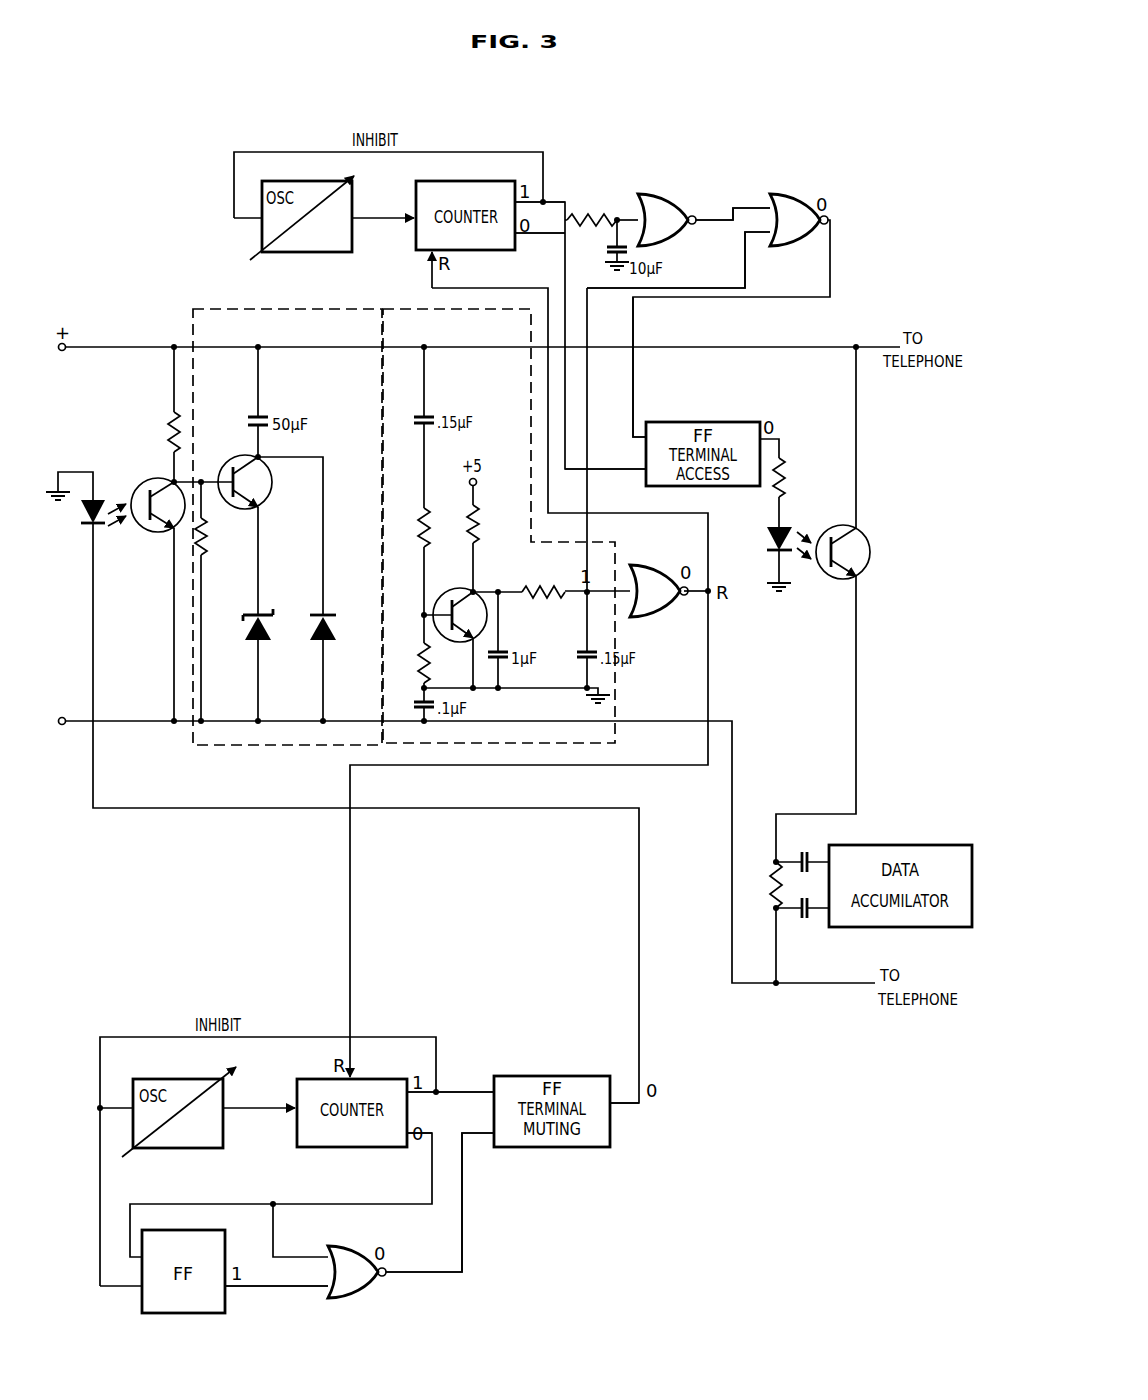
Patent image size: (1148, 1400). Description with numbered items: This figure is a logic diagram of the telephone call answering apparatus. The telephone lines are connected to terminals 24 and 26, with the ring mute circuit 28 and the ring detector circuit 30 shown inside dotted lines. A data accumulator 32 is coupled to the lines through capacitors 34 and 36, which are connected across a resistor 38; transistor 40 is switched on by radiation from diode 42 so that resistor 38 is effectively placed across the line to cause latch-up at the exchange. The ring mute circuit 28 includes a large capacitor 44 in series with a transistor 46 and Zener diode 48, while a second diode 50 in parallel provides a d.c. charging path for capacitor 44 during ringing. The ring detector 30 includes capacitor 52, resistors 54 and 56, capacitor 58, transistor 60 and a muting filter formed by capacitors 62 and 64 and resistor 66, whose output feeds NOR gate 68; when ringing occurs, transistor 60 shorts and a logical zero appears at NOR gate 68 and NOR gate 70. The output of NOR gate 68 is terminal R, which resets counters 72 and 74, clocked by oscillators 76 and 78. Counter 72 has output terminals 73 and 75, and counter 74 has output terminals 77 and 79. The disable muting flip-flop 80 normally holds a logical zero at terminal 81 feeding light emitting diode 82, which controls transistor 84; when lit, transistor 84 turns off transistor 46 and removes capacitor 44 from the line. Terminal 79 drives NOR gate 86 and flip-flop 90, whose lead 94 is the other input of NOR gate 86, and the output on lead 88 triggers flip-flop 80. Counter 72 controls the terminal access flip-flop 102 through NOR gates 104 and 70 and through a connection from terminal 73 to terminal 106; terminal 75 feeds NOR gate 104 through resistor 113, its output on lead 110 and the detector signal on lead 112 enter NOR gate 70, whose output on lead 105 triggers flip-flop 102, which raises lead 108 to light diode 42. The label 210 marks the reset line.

The terminal 24 is at (63, 352).
The terminal 26 is at (63, 704).
The ring mute circuit 28 is at (244, 305).
The ring detector circuit 30 is at (410, 305).
The data accumulator 32 is at (895, 844).
The capacitor 34 is at (813, 846).
The capacitor 36 is at (813, 916).
The resistor 38 is at (774, 865).
The transistor 40 is at (856, 541).
The diode 42 is at (768, 532).
The capacitor 44 is at (249, 420).
The transistor 46 is at (272, 482).
The Zener diode 48 is at (247, 617).
The second diode 50 is at (331, 623).
The capacitor 52 is at (417, 412).
The resistor 54 is at (419, 539).
The resistor 56 is at (419, 649).
The capacitor 58 is at (419, 700).
The transistor 60 is at (463, 587).
The capacitor 62 is at (502, 645).
The capacitor 64 is at (582, 648).
The resistor 66 is at (565, 584).
The NOR gate 68 is at (638, 571).
The NOR gate 70 is at (788, 196).
The counter 72 is at (463, 181).
The output terminal 73 is at (545, 201).
The counter 74 is at (363, 1085).
The output terminal 75 is at (536, 237).
The oscillator 76 is at (309, 181).
The output terminal 77 is at (437, 1090).
The oscillator 78 is at (171, 1085).
The output terminal 79 is at (432, 1146).
The disable muting flip-flop circuit 80 is at (505, 1081).
The output terminal 81 is at (617, 1106).
The light emitting diode 82 is at (80, 519).
The transistor 84 is at (140, 484).
The NOR gate 86 is at (355, 1295).
The lead 88 is at (462, 1213).
The flip-flop 90 is at (172, 1316).
The lead 94 is at (233, 1296).
The terminal access flip-flop 102 is at (695, 422).
The NOR gate 104 is at (648, 196).
The input lead 105 is at (633, 422).
The terminal 106 is at (633, 464).
The lead 108 is at (782, 443).
The lead 110 is at (753, 208).
The lead 112 is at (684, 290).
The resistor 113 is at (590, 216).
The reset line 210 is at (529, 682).